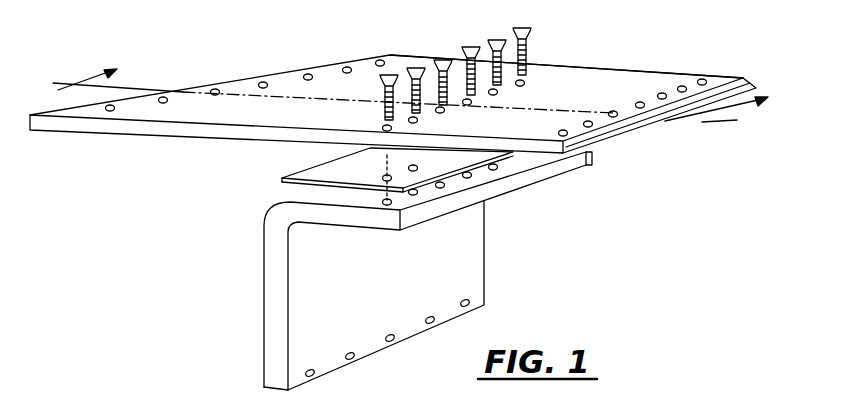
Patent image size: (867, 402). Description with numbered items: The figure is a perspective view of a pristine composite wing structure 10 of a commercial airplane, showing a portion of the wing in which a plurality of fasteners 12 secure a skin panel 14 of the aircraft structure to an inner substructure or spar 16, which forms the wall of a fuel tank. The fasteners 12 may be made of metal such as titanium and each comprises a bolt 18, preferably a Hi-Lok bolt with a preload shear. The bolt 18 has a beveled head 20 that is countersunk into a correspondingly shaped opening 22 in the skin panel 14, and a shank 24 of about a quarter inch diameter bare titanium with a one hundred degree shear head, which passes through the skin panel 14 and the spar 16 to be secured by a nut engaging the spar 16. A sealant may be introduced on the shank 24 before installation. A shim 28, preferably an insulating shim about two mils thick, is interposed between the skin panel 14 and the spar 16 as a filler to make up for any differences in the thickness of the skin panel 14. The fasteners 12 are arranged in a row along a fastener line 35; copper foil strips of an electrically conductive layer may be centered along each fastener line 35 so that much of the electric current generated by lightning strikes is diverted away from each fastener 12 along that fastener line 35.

The wing structure 10 is at (409, 195).
The fastener 12 is at (522, 32).
The skin panel 14 is at (86, 128).
The spar 16 is at (266, 247).
The bolt 18 is at (470, 53).
The beveled head 20 is at (380, 88).
The opening 22 is at (496, 94).
The shank 24 is at (380, 106).
The shim 28 is at (447, 163).
The fastener line 35 is at (553, 54).